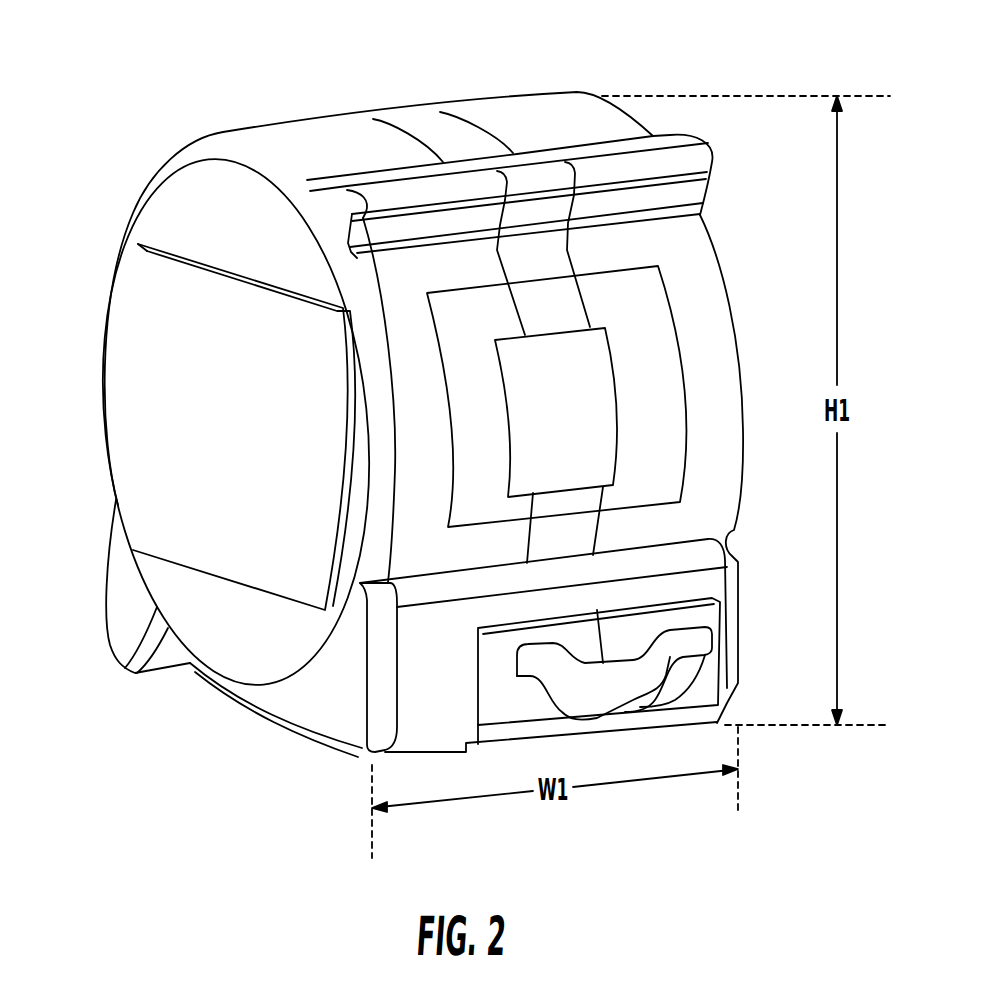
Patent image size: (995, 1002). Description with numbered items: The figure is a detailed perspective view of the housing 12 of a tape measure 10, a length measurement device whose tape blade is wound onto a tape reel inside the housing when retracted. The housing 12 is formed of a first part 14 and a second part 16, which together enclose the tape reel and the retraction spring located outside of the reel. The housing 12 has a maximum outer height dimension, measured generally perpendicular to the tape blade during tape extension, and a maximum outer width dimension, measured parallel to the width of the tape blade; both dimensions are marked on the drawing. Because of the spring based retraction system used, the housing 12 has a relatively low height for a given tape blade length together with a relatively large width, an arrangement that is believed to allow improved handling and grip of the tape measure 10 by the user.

The tape measure 10 is at (716, 63).
The housing 12 is at (75, 381).
The first part 14 is at (327, 150).
The second part 16 is at (540, 122).